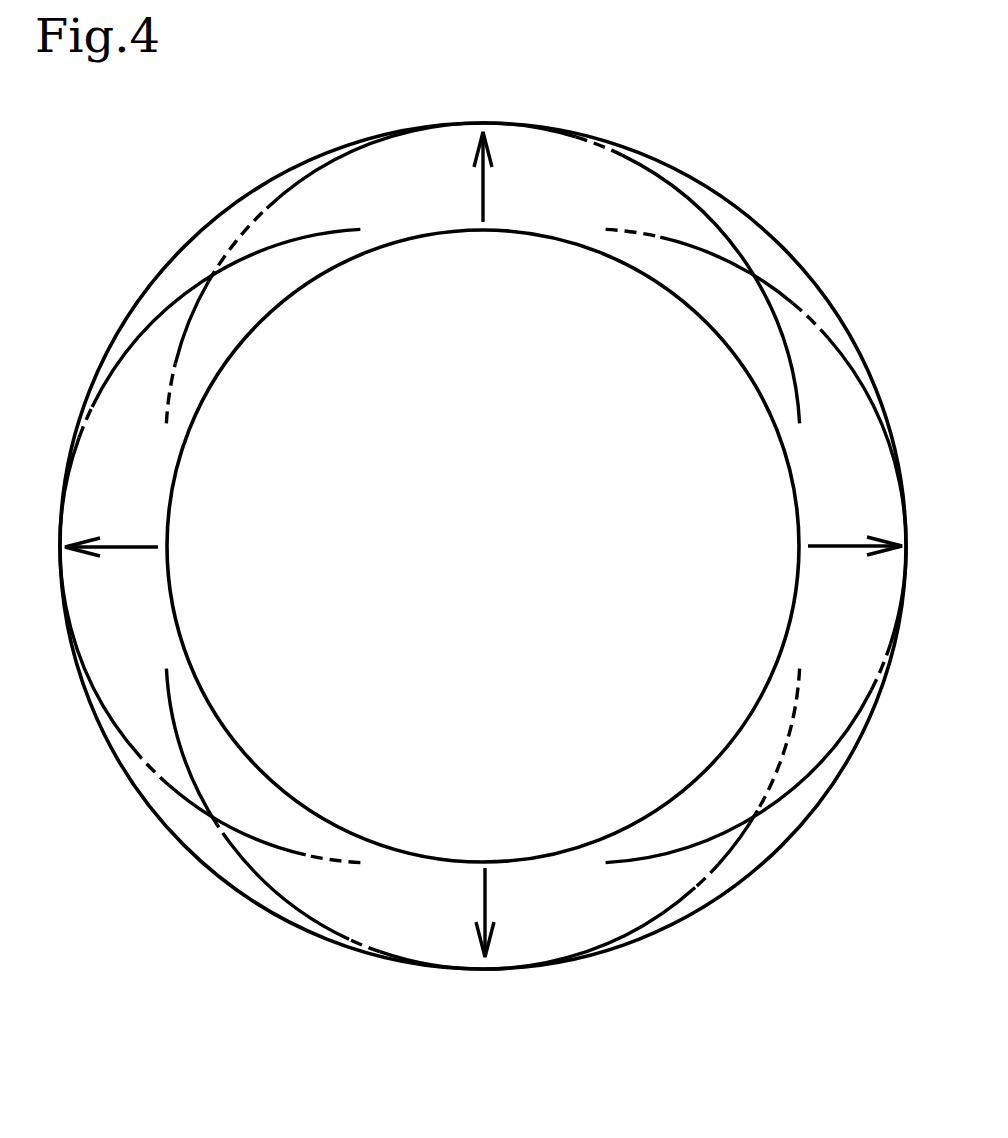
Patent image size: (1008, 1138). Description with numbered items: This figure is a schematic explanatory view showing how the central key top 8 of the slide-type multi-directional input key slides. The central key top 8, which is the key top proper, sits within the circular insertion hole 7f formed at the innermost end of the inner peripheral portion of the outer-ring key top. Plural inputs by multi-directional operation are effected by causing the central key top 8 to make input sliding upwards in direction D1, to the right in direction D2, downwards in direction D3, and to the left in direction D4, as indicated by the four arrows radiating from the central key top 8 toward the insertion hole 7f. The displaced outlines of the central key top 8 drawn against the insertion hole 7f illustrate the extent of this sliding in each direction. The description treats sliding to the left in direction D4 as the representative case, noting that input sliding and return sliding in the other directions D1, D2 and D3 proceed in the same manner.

The central key top 8 is at (483, 546).
The insertion hole 7f is at (177, 253).
The upwards direction D1 is at (482, 178).
The to the right direction D2 is at (852, 548).
The downwards direction D3 is at (486, 903).
The to the left direction D4 is at (112, 547).